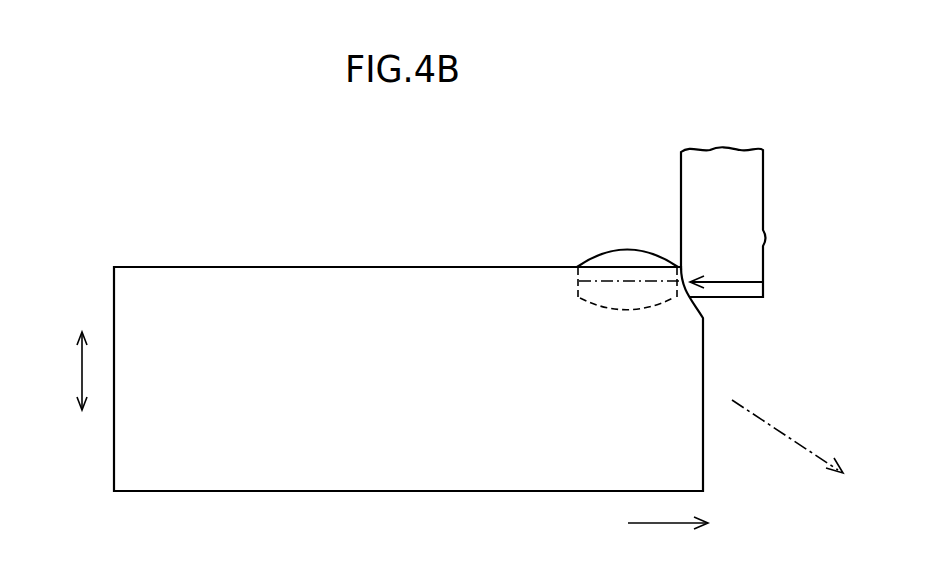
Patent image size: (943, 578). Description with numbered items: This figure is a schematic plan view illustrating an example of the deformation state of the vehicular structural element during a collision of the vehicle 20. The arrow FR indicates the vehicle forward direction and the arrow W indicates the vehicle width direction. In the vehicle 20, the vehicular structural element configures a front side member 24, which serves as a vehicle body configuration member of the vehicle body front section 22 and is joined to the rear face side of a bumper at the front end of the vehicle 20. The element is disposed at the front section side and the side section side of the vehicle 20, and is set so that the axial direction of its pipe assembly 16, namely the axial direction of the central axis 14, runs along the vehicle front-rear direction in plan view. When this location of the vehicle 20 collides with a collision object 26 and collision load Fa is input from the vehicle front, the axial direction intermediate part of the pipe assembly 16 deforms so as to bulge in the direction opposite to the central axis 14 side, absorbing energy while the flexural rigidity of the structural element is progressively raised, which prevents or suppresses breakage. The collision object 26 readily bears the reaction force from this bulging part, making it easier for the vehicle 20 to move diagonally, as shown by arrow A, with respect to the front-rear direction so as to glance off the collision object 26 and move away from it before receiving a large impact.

The vehicle 20 is at (430, 230).
The vehicle body front section 22 is at (594, 249).
The central axis 14 is at (628, 281).
The pipe assembly 16 is at (593, 302).
The front side member 24 is at (630, 322).
The collision object 26 is at (733, 297).
The collision load Fa is at (735, 282).
The arrow indicating diagonal movement A is at (762, 419).
The vehicle width direction W is at (80, 368).
The vehicle forward direction FR is at (687, 525).